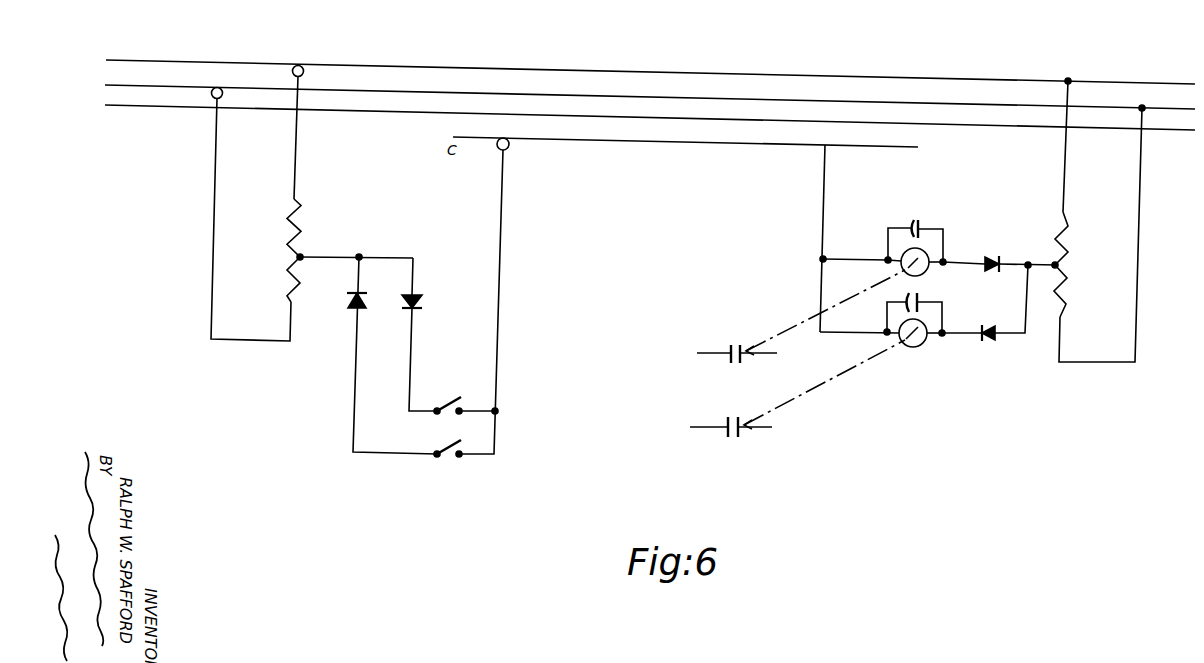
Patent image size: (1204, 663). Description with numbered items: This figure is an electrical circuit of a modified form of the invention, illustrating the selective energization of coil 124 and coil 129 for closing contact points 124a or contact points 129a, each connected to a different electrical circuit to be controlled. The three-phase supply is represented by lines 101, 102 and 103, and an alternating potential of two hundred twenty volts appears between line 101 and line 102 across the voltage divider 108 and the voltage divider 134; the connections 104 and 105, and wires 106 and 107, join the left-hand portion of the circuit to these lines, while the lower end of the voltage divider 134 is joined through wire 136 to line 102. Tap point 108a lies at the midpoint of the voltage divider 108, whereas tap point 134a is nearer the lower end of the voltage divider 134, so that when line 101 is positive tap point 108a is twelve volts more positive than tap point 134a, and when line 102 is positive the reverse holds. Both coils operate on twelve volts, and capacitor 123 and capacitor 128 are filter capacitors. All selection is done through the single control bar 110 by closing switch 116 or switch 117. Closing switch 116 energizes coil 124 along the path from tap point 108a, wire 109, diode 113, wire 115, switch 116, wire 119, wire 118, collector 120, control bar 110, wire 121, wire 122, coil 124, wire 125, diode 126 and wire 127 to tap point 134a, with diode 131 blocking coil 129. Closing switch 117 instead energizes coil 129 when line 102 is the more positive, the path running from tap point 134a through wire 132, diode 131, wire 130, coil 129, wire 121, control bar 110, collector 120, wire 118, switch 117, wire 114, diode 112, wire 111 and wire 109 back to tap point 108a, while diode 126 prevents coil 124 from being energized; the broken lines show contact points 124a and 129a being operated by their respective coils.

The line 101 is at (147, 59).
The line 102 is at (116, 84).
The line 103 is at (115, 107).
The terminal connector 104 is at (305, 67).
The terminal connector 105 is at (222, 98).
The conductor 106 is at (296, 163).
The conductor 107 is at (212, 220).
The voltage divider 108 is at (304, 213).
The tap point 108a is at (302, 254).
The wire 109 is at (349, 254).
The control bar 110 is at (473, 137).
The wire 111 is at (358, 276).
The diode 112 is at (356, 309).
The diode 113 is at (421, 306).
The wire 114 is at (352, 390).
The wire 115 is at (411, 370).
The switch 116 is at (455, 402).
The switch 117 is at (447, 458).
The wire 118 is at (499, 309).
The wire 119 is at (479, 411).
The collector 120 is at (508, 149).
The wire 121 is at (822, 183).
The wire 122 is at (863, 256).
The capacitor 123 is at (913, 222).
The coil 124 is at (928, 269).
The contact points 124a is at (728, 348).
The wire 125 is at (957, 259).
The diode 126 is at (987, 257).
The wire 127 is at (1043, 252).
The capacitor 128 is at (903, 297).
The coil 129 is at (917, 349).
The contact points 129a is at (728, 420).
The conductor 130 is at (955, 330).
The diode 131 is at (990, 348).
The wire 132 is at (1013, 335).
The voltage divider 134 is at (1066, 225).
The tap point 134a is at (1060, 266).
The wire 136 is at (1140, 215).